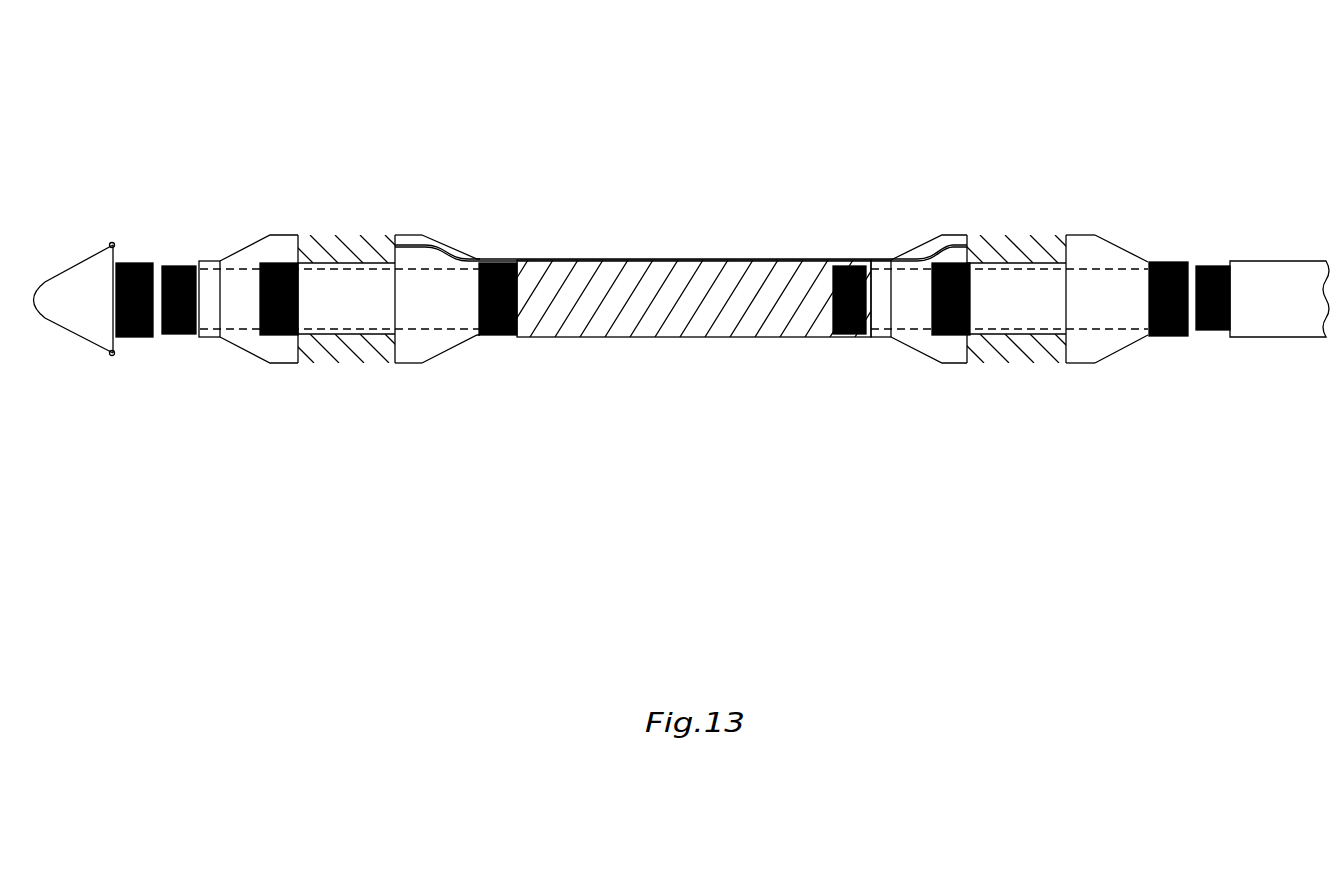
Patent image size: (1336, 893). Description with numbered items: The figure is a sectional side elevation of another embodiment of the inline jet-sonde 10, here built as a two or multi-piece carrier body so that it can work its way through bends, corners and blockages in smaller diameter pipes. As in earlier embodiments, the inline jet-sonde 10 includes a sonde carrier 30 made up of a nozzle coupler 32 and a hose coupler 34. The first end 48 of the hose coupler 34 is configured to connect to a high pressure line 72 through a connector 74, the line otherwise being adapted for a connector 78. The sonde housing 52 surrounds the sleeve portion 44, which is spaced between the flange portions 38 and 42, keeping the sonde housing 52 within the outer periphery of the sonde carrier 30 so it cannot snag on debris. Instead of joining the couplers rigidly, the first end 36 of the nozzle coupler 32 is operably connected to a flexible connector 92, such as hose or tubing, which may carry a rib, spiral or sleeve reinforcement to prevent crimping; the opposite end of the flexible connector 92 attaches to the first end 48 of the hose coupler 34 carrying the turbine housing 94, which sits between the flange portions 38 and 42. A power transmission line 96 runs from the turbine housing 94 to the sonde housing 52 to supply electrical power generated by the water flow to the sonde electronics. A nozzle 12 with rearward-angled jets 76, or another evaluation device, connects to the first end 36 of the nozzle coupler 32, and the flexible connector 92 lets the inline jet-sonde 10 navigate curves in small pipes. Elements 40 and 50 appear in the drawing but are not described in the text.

The inline jet-sonde 10 is at (843, 92).
The nozzle 12 is at (93, 232).
The sonde carrier 30 is at (392, 183).
The nozzle coupler 32 is at (260, 366).
The hose coupler 34 is at (437, 237).
The first end 36 is at (853, 335).
The flange portion 38 is at (283, 238).
The collar 40 is at (263, 337).
The flange portion 42 is at (433, 347).
The sleeve portion 44 is at (1035, 335).
The first end 48 is at (497, 335).
The bore 50 is at (302, 280).
The sonde housing 52 is at (388, 235).
The high pressure line 72 is at (1273, 333).
The connector 74 is at (1217, 267).
The jet 76 is at (113, 244).
The connector 78 is at (127, 337).
The flexible connector 92 is at (683, 257).
The turbine housing 94 is at (343, 353).
The power transmission line 96 is at (445, 257).